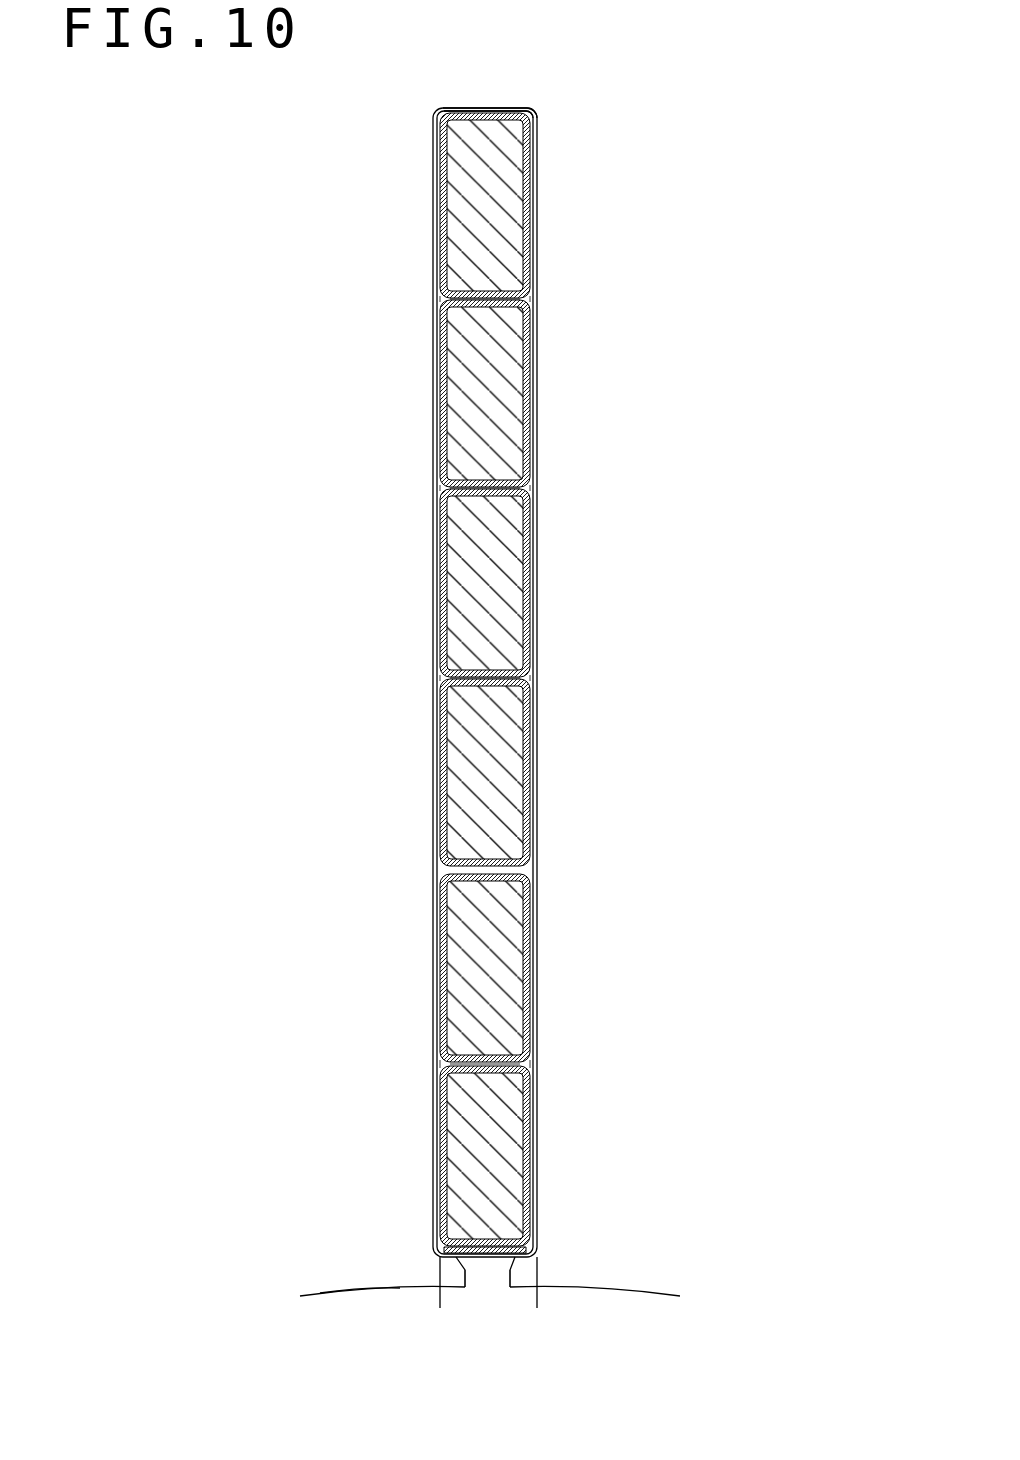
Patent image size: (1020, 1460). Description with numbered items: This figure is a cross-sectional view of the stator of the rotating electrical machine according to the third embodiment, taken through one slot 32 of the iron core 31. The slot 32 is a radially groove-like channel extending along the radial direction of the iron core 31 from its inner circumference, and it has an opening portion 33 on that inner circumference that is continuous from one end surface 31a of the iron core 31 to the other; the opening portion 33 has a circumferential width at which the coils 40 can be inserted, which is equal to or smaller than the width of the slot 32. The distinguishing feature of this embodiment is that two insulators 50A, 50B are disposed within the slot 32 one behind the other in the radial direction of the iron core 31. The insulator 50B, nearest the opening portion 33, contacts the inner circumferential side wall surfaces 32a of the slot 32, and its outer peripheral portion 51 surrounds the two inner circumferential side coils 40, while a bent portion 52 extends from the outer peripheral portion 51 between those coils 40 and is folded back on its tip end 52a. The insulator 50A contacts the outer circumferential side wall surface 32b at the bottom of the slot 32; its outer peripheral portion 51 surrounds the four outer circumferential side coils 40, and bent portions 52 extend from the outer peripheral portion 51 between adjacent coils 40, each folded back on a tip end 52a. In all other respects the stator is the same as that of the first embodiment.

The iron core 31 is at (597, 1295).
The end surface 31a is at (352, 1273).
The slot 32 is at (543, 488).
The inner circumferential side wall surfaces 32a is at (491, 1297).
The outer circumferential side wall surface 32b is at (488, 110).
The opening portion 33 is at (478, 1298).
The coil 40 is at (499, 201).
The insulator 50A is at (536, 107).
The insulator 50B is at (543, 878).
The outer peripheral portion 51 is at (438, 406).
The bent portion 52 is at (494, 284).
The tip end 52a is at (446, 299).